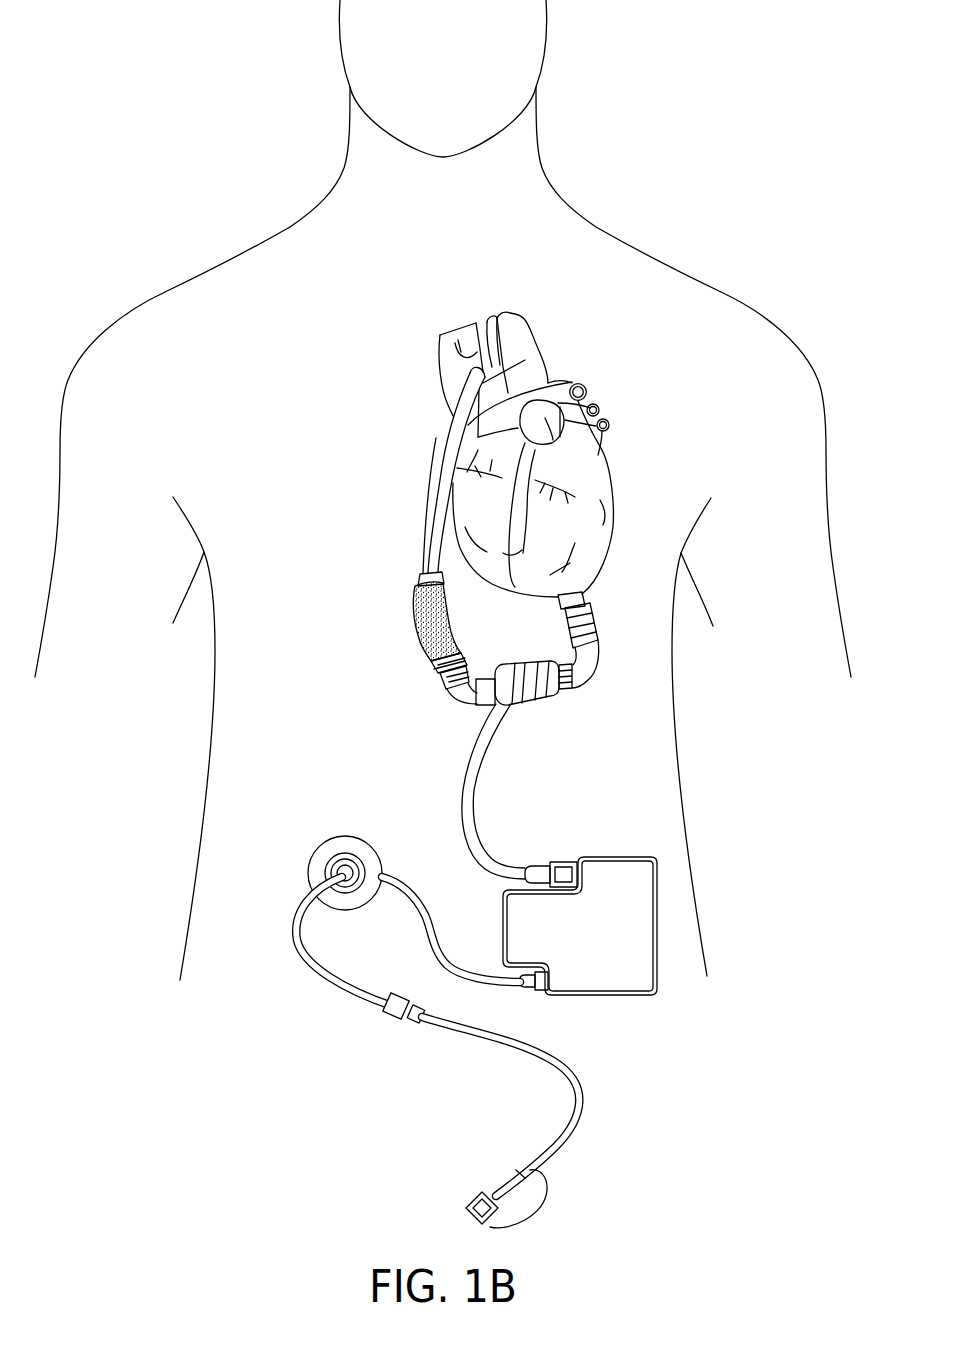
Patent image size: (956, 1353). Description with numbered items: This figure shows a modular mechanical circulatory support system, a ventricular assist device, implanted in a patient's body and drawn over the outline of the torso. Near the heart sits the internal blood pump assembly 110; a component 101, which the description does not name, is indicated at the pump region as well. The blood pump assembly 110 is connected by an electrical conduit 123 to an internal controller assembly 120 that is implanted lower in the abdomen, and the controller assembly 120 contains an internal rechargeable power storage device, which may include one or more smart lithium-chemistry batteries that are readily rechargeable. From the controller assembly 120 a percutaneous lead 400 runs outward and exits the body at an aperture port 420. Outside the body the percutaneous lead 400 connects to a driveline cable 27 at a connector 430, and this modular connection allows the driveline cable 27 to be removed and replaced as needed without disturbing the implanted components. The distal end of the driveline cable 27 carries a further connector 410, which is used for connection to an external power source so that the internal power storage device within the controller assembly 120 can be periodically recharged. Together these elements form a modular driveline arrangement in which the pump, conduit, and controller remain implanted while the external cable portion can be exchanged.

The blood pump 101 is at (399, 609).
The blood pump assembly 110 is at (533, 700).
The electrical conduit 123 is at (465, 802).
The controller assembly 120 is at (666, 929).
The percutaneous lead 400 is at (397, 1025).
The aperture port 420 is at (322, 852).
The connector 430 is at (392, 1020).
The driveline cable 27 is at (593, 1098).
The connector 410 is at (476, 1198).